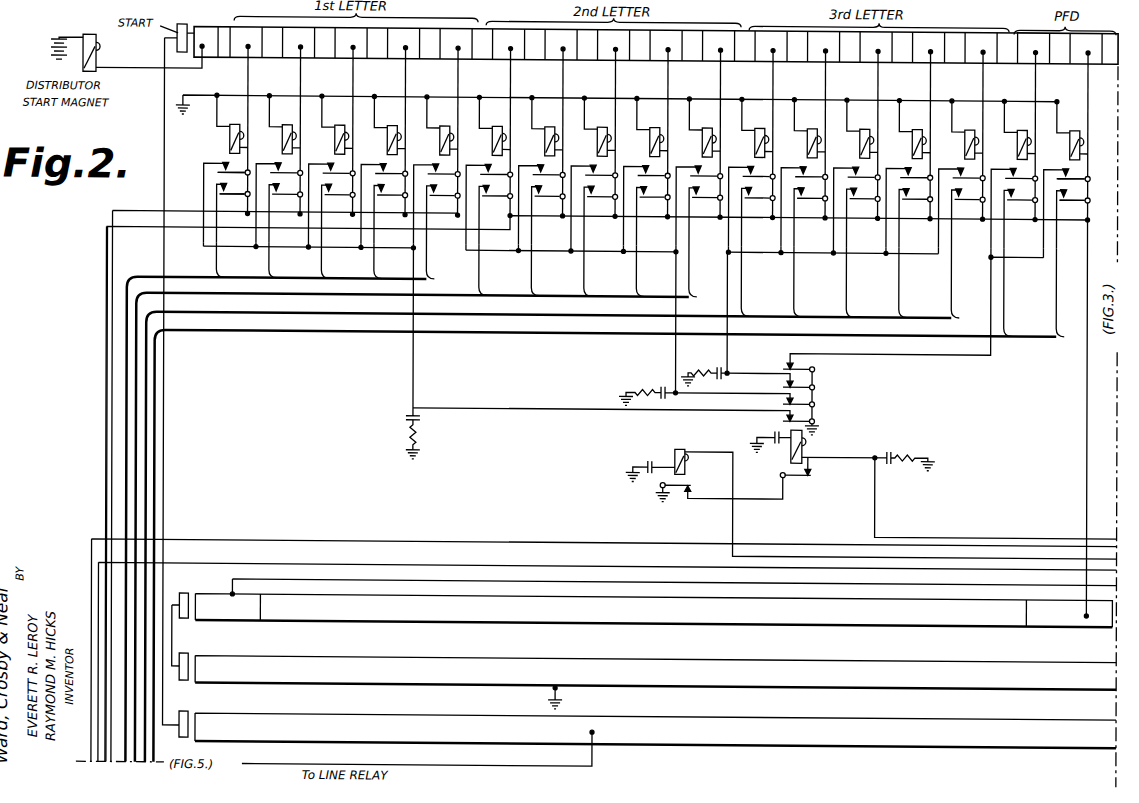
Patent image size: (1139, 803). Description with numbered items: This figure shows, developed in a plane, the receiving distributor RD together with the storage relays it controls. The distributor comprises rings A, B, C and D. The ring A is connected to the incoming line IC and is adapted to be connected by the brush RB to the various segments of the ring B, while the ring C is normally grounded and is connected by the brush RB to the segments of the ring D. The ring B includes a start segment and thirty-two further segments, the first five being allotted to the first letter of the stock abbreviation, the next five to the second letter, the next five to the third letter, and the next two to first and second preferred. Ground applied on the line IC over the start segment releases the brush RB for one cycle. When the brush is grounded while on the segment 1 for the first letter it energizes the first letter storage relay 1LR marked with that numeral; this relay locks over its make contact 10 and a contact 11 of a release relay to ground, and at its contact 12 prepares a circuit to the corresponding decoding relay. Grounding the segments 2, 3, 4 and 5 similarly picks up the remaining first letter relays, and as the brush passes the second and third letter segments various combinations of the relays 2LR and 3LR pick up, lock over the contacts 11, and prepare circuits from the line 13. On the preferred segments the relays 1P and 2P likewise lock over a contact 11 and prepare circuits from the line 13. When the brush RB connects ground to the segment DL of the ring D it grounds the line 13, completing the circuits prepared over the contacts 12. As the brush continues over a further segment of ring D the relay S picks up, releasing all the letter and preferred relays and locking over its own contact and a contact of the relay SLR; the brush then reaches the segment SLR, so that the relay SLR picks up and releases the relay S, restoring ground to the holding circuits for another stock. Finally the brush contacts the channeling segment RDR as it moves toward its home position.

The ring B is at (217, 27).
The segment 1 is at (633, 196).
The segment 2 is at (677, 190).
The segment 3 is at (598, 181).
The segment 4 is at (651, 181).
The segment 5 is at (703, 182).
The first letter storage relay 1LR is at (219, 160).
The second letter storage relay 2LR is at (487, 170).
The third letter storage relay 3LR is at (748, 182).
The first preferred storage relay 1P is at (1014, 193).
The second preferred storage relay 2P is at (1066, 194).
The make contact 10 is at (652, 169).
The contact of release relay 11 is at (801, 396).
The contact 12 is at (652, 206).
The line 13 is at (106, 421).
The S relay S is at (901, 484).
The SLR relay SLR is at (871, 504).
The brush RB is at (166, 434).
The receiving distributor RD is at (405, 593).
The channeling segment RDR is at (233, 607).
The segment DL is at (1047, 613).
The ring D is at (218, 593).
The ring C is at (261, 655).
The ring A is at (257, 714).
The incoming line IC is at (418, 747).